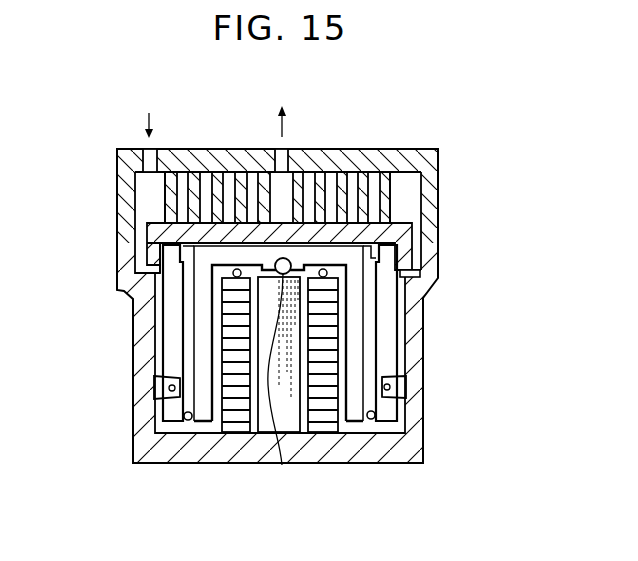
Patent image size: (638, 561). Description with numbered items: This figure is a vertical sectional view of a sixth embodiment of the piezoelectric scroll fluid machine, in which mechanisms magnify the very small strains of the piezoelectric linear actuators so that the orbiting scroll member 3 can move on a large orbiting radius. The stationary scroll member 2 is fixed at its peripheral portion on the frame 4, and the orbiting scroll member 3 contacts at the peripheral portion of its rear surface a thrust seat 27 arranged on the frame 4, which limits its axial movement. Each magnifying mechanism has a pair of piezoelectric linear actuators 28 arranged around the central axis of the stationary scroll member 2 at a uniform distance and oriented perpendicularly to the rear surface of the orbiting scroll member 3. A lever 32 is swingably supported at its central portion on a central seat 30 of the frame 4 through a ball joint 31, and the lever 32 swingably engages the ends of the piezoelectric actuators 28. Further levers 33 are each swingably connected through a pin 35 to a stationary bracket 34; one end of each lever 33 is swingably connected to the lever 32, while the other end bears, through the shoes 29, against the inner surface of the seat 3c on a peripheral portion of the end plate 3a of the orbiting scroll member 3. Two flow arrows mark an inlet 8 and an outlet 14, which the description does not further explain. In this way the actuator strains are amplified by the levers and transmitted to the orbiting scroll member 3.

The stationary scroll member 2 is at (413, 150).
The orbiting scroll member 3 is at (413, 238).
The end plate 3a is at (397, 227).
The seat 3c is at (153, 263).
The frame 4 is at (410, 453).
The inlet 8 is at (145, 158).
The outlet 14 is at (283, 148).
The thrust seat 27 is at (421, 272).
The piezoelectric linear actuator 28 is at (237, 432).
The shoe 29 is at (160, 243).
The central seat 30 is at (265, 432).
The ball joint 31 is at (282, 465).
The lever 32 is at (362, 312).
The lever 33 is at (388, 352).
The stationary bracket 34 is at (400, 392).
The pin 35 is at (390, 417).